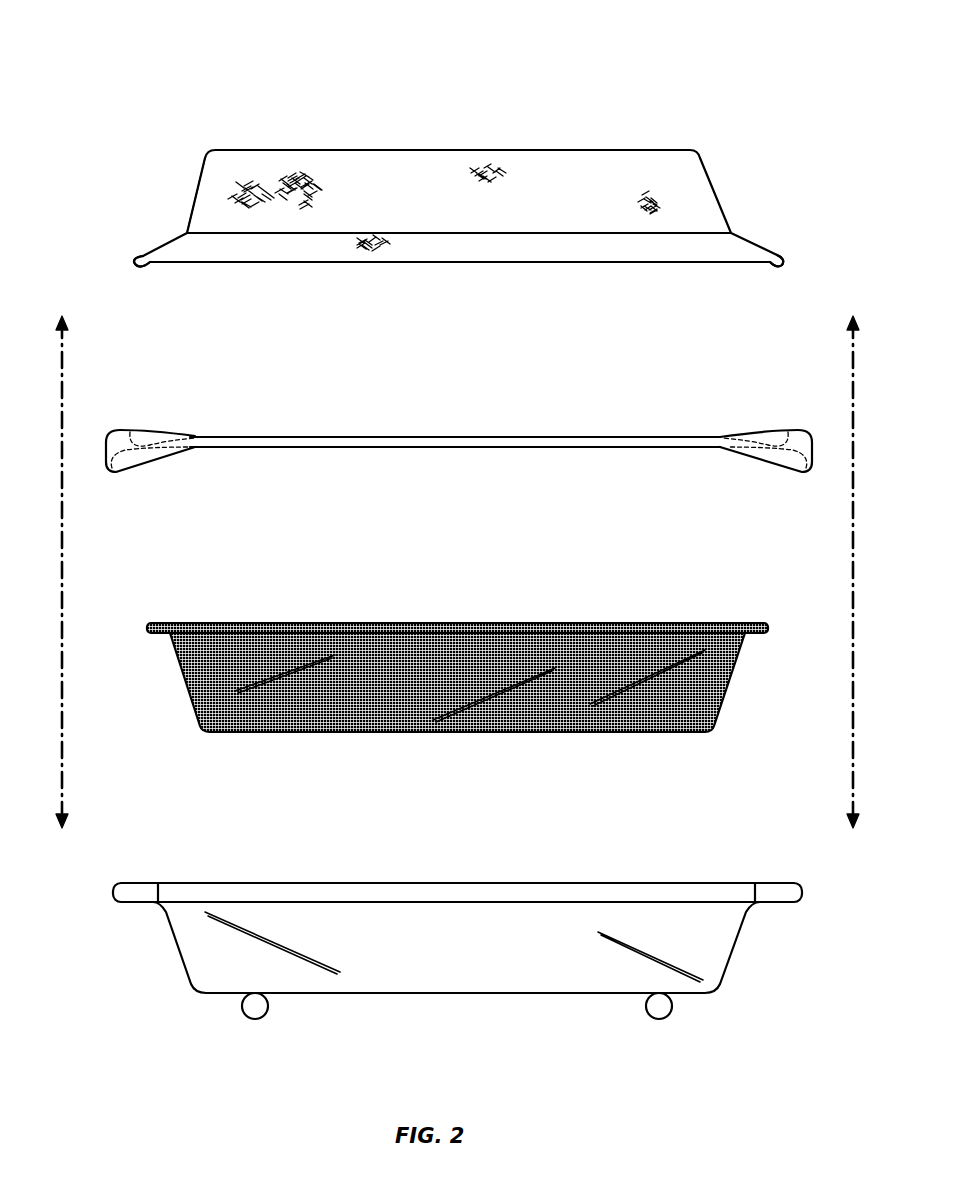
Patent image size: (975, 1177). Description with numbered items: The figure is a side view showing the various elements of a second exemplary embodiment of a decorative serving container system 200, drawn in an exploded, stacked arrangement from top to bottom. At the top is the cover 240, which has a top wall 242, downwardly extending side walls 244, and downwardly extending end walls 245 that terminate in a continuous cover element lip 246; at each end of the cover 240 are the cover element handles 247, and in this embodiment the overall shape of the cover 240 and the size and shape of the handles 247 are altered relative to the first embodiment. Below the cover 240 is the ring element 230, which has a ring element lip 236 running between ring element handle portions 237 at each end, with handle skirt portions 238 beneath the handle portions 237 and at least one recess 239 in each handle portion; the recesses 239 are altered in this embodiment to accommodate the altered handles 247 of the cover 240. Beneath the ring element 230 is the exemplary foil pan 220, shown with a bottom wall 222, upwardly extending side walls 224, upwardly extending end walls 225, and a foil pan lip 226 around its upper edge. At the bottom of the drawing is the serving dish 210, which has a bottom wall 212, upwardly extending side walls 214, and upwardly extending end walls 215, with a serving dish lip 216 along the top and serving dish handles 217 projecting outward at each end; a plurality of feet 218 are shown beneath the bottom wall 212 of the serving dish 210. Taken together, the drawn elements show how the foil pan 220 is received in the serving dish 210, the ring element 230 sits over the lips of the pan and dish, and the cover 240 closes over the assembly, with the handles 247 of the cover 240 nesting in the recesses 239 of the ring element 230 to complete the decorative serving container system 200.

The decorative serving container system 200 is at (165, 55).
The serving dish 210 is at (460, 945).
The bottom wall 212 is at (400, 994).
The upwardly extending side walls 214 is at (487, 968).
The upwardly extending end walls 215 is at (182, 960).
The serving dish lip 216 is at (532, 891).
The serving dish handles 217 is at (133, 892).
The feet 218 is at (243, 1013).
The foil pan 220 is at (457, 673).
The bottom wall 222 is at (357, 733).
The upwardly extending side walls 224 is at (220, 677).
The upwardly extending end walls 225 is at (727, 698).
The foil pan lip 226 is at (178, 622).
The ring element 230 is at (458, 423).
The ring element lip 236 is at (478, 435).
The ring element handle portions 237 is at (112, 432).
The handle skirt portions 238 is at (132, 458).
The recess 239 is at (138, 435).
The cover 240 is at (457, 179).
The top wall 242 is at (385, 165).
The downwardly extending side walls 244 is at (683, 190).
The downwardly extending end walls 245 is at (193, 197).
The continuous cover element lip 246 is at (668, 247).
The cover element handles 247 is at (778, 258).